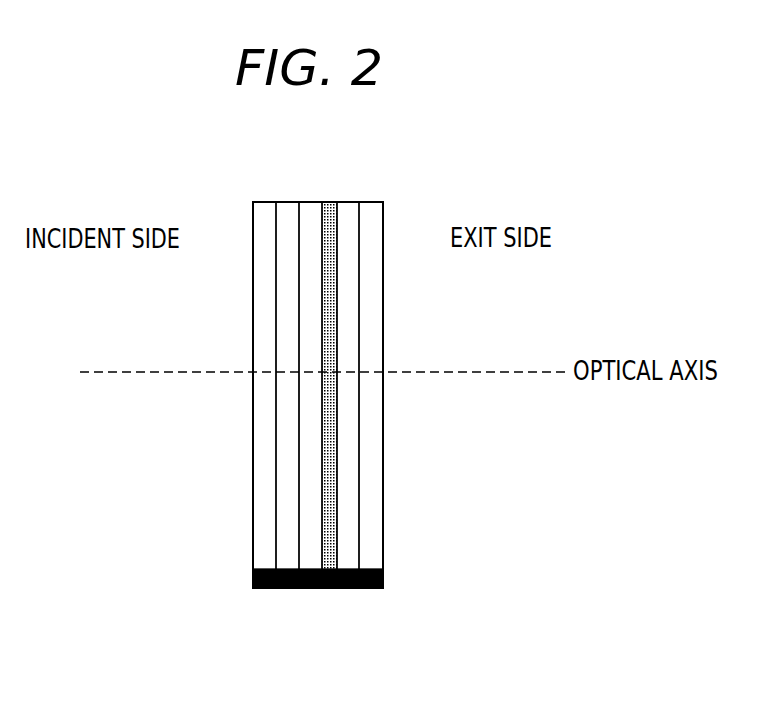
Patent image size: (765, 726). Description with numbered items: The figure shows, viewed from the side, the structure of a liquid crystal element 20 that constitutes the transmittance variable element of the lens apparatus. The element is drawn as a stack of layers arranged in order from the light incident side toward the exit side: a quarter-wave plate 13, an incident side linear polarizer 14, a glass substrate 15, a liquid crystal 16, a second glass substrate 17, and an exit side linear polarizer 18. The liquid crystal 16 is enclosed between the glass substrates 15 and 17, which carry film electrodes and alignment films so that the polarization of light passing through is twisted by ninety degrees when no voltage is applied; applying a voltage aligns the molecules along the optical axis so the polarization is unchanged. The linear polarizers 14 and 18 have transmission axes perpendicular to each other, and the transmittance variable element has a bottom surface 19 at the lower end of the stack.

The quarter-wave plate 13 is at (265, 208).
The linear polarizer (incident side polarizer) 14 is at (287, 208).
The glass substrate 15 is at (310, 208).
The liquid crystal 16 is at (328, 208).
The glass substrate 17 is at (347, 208).
The linear polarizer (exit side polarizer) 18 is at (372, 208).
The bottom surface 19 is at (332, 588).
The liquid crystal element 20 is at (196, 628).